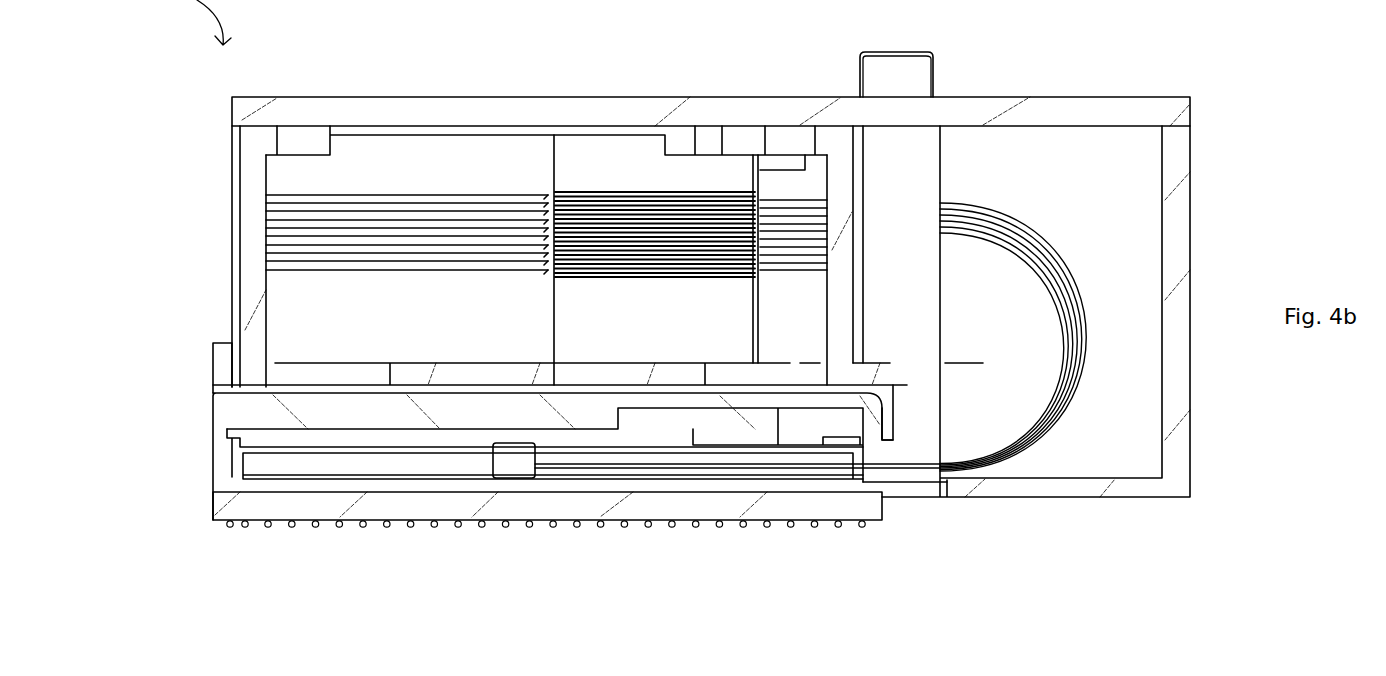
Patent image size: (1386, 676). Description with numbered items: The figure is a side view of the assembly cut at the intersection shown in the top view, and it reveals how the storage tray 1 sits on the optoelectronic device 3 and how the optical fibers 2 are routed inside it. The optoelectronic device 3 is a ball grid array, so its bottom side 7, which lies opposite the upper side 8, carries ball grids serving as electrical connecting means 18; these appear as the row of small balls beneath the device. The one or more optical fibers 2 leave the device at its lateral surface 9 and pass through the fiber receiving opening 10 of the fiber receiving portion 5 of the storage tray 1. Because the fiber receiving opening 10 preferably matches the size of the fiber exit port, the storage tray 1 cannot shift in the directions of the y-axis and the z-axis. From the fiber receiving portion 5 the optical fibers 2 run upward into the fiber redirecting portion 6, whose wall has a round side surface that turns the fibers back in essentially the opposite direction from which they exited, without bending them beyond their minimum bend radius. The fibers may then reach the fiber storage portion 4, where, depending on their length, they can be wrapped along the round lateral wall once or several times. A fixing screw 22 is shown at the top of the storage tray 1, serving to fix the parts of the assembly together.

The storage tray 1 is at (232, 242).
The optical fibers 2 is at (1012, 228).
The optoelectronic device 3 is at (213, 455).
The fiber storage portion 4 is at (857, 66).
The fiber receiving portion 5 is at (1224, 365).
The fiber redirecting portion 6 is at (1224, 98).
The bottom side 7 is at (598, 374).
The upper side 8 is at (553, 431).
The lateral surface 9 is at (893, 418).
The fiber receiving opening 10 is at (947, 471).
The electrical connecting means 18 is at (340, 527).
The fixing screw 22 is at (937, 62).